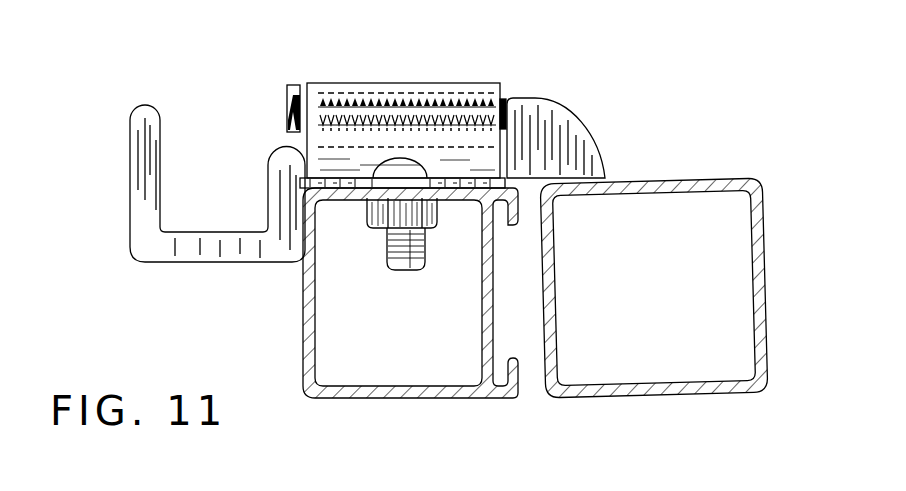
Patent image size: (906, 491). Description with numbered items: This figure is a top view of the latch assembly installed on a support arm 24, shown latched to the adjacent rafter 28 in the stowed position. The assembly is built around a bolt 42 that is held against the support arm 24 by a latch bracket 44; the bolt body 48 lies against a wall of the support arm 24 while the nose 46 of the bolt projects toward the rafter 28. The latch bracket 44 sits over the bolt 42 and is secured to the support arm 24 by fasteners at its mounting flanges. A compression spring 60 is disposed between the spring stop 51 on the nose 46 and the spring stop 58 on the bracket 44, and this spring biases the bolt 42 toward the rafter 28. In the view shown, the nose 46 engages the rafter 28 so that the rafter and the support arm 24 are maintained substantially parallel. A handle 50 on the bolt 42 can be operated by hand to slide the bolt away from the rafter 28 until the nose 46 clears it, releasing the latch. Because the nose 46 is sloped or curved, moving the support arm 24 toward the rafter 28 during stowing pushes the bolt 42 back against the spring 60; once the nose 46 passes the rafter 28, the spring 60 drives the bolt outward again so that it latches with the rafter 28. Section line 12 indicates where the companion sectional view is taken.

The section line 12- 12 is at (452, 33).
The support arm 24 is at (335, 402).
The rafter 28 is at (697, 178).
The bolt 42 is at (180, 212).
The latch bracket 44 is at (462, 82).
The nose 46 is at (577, 127).
The bolt body 48 is at (340, 158).
The handle 50 is at (130, 152).
The spring stop 51 is at (459, 188).
The spring stop 58 is at (286, 108).
The compression spring 60 is at (500, 86).